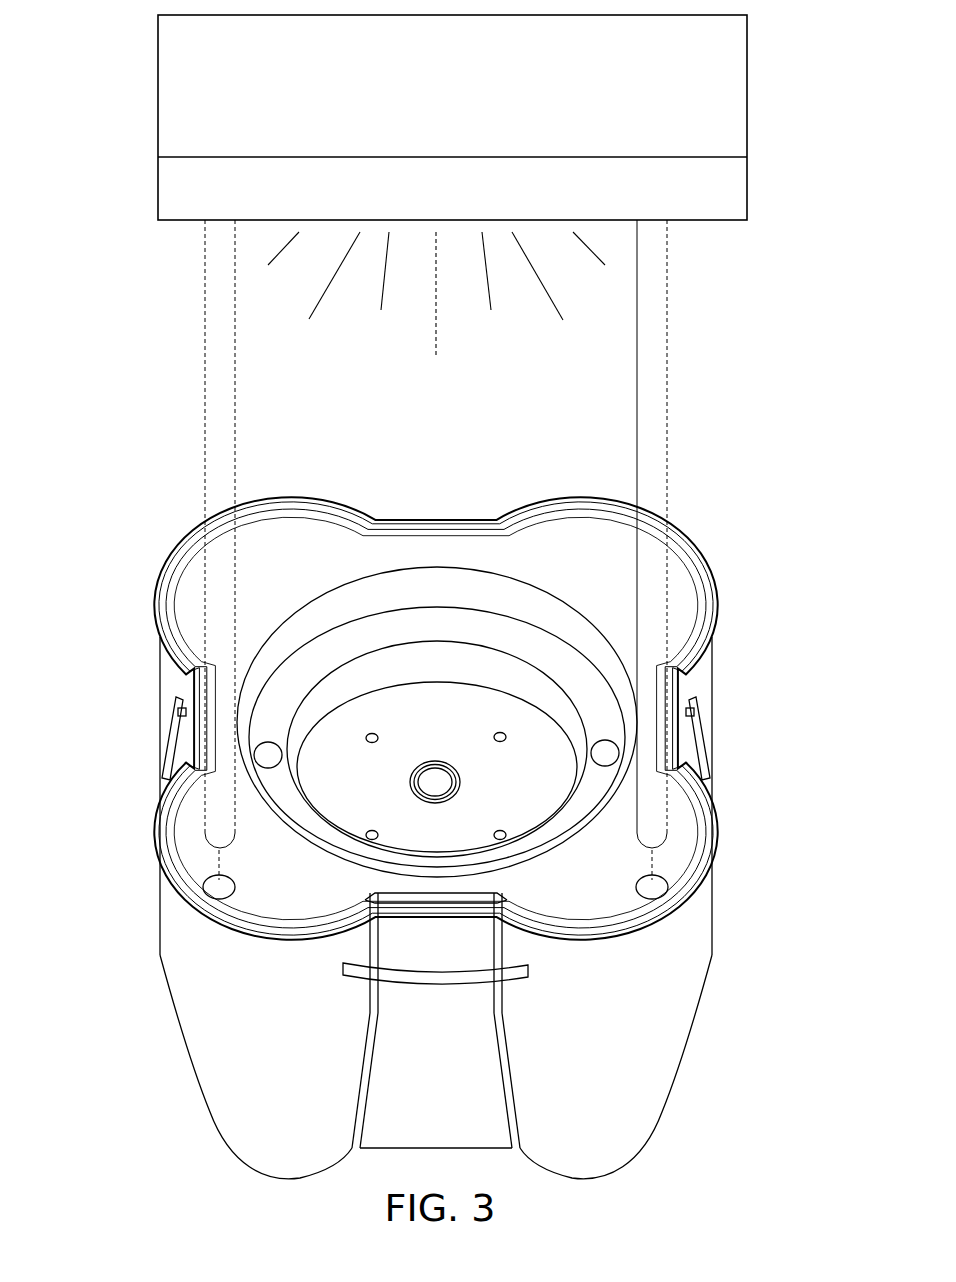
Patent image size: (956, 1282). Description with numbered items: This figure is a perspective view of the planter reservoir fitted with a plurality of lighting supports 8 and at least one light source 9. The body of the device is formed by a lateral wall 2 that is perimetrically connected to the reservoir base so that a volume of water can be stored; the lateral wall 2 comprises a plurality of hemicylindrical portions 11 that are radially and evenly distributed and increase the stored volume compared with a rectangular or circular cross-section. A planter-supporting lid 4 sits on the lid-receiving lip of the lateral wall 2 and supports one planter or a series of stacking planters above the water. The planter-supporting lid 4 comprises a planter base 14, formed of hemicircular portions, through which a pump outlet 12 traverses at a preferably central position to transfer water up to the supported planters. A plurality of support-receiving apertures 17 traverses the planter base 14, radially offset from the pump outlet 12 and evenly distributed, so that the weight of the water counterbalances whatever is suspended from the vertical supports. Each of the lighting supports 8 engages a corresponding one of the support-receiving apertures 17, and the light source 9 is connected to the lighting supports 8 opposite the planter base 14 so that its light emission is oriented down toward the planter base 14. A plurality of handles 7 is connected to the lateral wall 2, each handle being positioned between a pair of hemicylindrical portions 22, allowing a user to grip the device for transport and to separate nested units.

The lateral wall 2 is at (730, 1029).
The planter-supporting lid 4 is at (398, 436).
The handles 7 is at (165, 745).
The lighting supports 8 is at (655, 275).
The light source 9 is at (727, 185).
The hemicylindrical portions 11 is at (700, 680).
The pump outlet 12 is at (436, 776).
The planter base 14 is at (553, 548).
The support-receiving apertures 17 is at (229, 881).
The pair of hemicylindrical portions 22 is at (165, 678).